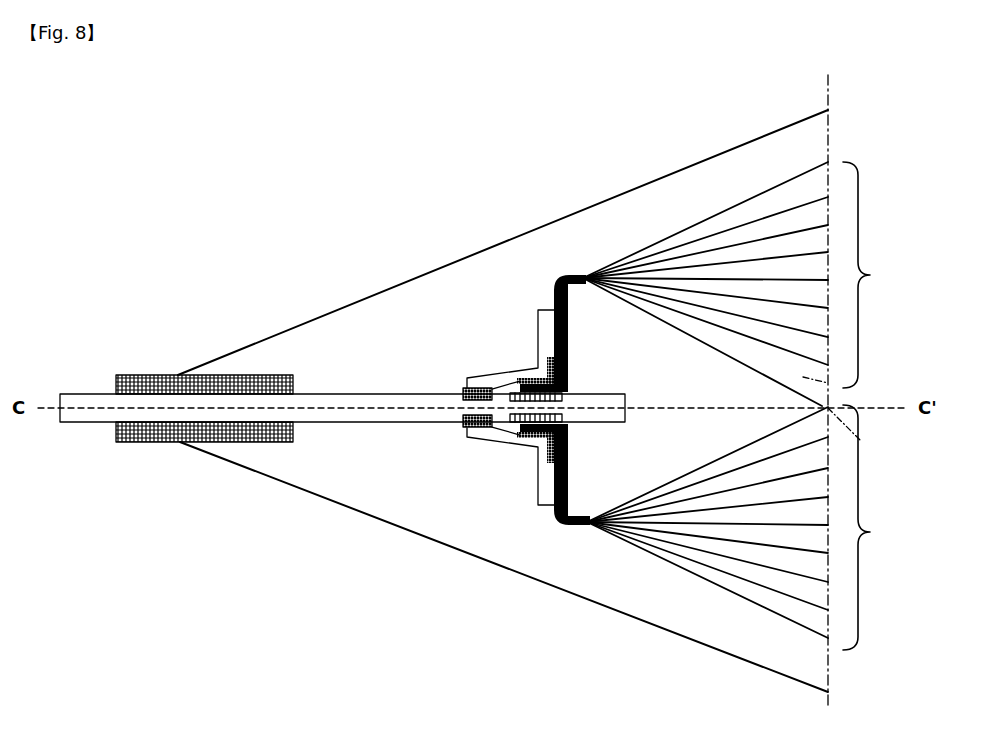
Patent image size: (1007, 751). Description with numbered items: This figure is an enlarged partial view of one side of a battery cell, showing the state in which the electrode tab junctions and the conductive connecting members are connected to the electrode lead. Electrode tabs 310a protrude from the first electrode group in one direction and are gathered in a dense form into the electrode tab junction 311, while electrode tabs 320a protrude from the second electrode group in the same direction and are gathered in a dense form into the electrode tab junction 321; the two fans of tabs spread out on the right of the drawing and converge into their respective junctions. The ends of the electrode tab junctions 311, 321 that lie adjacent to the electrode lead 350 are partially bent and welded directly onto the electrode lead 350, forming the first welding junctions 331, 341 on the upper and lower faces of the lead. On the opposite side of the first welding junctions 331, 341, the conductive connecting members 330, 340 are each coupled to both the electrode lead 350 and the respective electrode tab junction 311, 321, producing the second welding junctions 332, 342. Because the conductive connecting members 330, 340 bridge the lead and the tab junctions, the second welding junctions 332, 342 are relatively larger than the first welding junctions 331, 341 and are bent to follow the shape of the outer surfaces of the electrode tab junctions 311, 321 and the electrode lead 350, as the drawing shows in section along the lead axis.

The electrode tab junction 311 is at (563, 275).
The electrode tab junction 321 is at (557, 523).
The conductive connecting member 330 is at (540, 340).
The conductive connecting member 340 is at (540, 467).
The first welding junction 331 is at (557, 397).
The first welding junction 341 is at (557, 417).
The second welding junction 332 is at (467, 387).
The second welding junction 342 is at (467, 428).
The electrode lead 350 is at (93, 412).
The electrode tabs 310a is at (755, 284).
The electrode tabs 320a is at (757, 527).